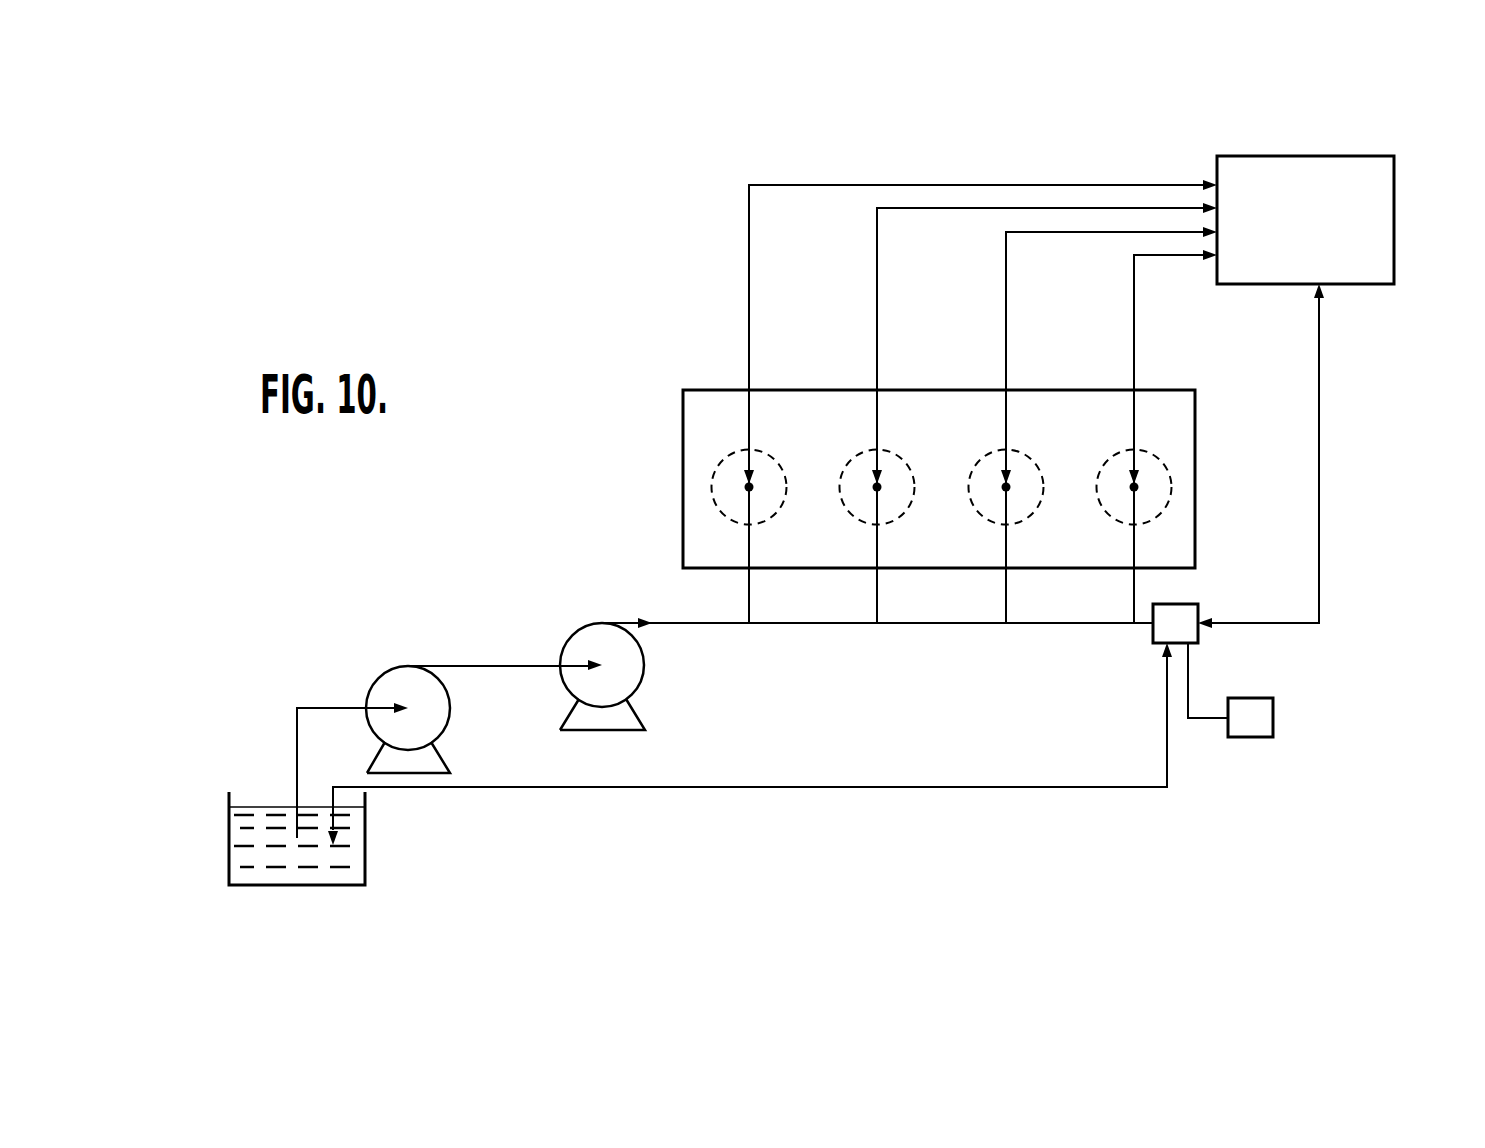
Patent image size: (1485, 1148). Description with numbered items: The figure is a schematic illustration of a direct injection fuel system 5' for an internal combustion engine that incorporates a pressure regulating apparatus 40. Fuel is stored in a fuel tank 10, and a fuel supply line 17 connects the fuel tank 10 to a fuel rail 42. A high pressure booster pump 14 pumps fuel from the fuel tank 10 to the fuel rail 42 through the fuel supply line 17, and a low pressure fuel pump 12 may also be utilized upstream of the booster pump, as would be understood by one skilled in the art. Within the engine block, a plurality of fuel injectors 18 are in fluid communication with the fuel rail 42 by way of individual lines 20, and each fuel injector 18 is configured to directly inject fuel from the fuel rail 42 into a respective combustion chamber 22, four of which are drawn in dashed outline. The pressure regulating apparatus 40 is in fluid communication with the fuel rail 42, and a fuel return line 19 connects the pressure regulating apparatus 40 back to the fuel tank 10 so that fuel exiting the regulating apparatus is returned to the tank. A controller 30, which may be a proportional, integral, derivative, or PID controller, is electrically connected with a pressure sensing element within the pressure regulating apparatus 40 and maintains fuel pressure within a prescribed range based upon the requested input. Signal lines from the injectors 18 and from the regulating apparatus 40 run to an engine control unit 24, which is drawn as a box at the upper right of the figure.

The direct injection fuel system 5' is at (543, 269).
The fuel tank 10 is at (229, 838).
The low pressure fuel pump 12 is at (447, 757).
The high pressure booster pump 14 is at (645, 720).
The fuel supply line 17 is at (297, 750).
The fuel injector 18 is at (745, 487).
The fuel return line 19 is at (848, 787).
The injector fuel line 20 is at (877, 595).
The combustion chamber 22 is at (716, 506).
The engine control unit 24 is at (1394, 178).
The controller 30 is at (1249, 698).
The pressure regulating apparatus 40 is at (1195, 606).
The fuel rail 42 is at (843, 623).